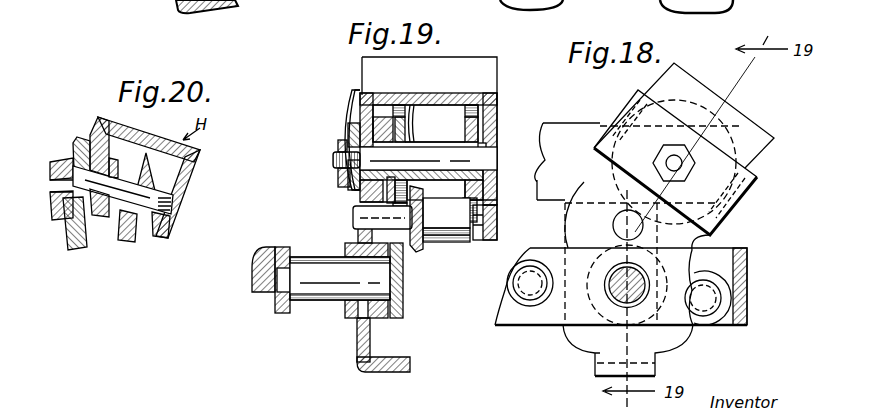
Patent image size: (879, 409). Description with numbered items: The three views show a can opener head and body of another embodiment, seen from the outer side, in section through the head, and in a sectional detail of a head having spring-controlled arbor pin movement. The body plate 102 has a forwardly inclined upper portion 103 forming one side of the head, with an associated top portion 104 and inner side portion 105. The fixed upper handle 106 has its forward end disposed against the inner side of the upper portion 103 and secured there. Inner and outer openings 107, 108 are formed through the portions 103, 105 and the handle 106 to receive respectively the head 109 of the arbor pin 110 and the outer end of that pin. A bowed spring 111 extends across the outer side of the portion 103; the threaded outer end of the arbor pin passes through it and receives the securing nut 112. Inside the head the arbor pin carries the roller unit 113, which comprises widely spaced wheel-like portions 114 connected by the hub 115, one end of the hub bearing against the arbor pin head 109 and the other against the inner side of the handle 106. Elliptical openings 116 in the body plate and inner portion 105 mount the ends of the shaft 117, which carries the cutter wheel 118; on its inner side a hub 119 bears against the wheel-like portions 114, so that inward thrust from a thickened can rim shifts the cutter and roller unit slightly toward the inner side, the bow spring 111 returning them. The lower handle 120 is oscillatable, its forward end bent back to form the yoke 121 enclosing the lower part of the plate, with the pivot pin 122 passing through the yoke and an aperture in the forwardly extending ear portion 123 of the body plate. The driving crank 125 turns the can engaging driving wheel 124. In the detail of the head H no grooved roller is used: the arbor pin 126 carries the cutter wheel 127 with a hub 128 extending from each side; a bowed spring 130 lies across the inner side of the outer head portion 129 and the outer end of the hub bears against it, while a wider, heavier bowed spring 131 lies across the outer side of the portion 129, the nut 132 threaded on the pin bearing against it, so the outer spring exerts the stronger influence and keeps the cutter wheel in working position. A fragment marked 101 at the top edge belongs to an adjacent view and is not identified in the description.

In FIG. 18, the fragment of adjacent figure 101 is at (652, 8).
In FIG. 19, the body plate 102 is at (358, 347).
In FIG. 18, the body plate 102 is at (580, 334).
In FIG. 19, the upper portion of the body plate 103 is at (360, 115).
In FIG. 18, the upper portion of the body plate 103 is at (748, 157).
In FIG. 19, the top portion of the head 104 is at (489, 80).
In FIG. 18, the top portion of the head 104 is at (742, 112).
In FIG. 19, the inner side portion of the head 105 is at (493, 123).
In FIG. 18, the fixed upper handle 106 is at (577, 127).
In FIG. 19, the inner opening 107 is at (490, 144).
In FIG. 19, the outer opening 108 is at (360, 196).
In FIG. 19, the head of the arbor pin 109 is at (492, 158).
In FIG. 19, the arbor pin 110 is at (333, 160).
In FIG. 19, the bowed spring 111 is at (348, 187).
In FIG. 18, the bowed spring 111 is at (713, 190).
In FIG. 19, the securing nut 112 is at (340, 145).
In FIG. 19, the roller unit 113 is at (438, 132).
In FIG. 19, the wheel-like portions 114 is at (493, 110).
In FIG. 19, the hub 115 is at (417, 108).
In FIG. 19, the elliptical openings 116 is at (495, 218).
In FIG. 19, the shaft 117 is at (468, 235).
In FIG. 18, the shaft 117 is at (617, 224).
In FIG. 19, the cutter wheel 118 is at (417, 250).
In FIG. 19, the hub 119 is at (447, 238).
In FIG. 18, the lower handle 120 is at (548, 326).
In FIG. 18, the yoke 121 is at (758, 259).
In FIG. 18, the pivot pin 122 is at (713, 298).
In FIG. 18, the ear portion 123 is at (727, 328).
In FIG. 19, the can engaging driving wheel 124 is at (400, 318).
In FIG. 19, the driving crank 125 is at (292, 300).
In FIG. 20, the arbor pin 126 is at (122, 215).
In FIG. 20, the cutter wheel 127 is at (156, 168).
In FIG. 20, the hub 128 is at (142, 222).
In FIG. 20, the outer portion of the head 129 is at (100, 118).
In FIG. 20, the bowed spring 130 is at (93, 220).
In FIG. 20, the bowed spring 131 is at (50, 205).
In FIG. 20, the nut 132 is at (74, 150).